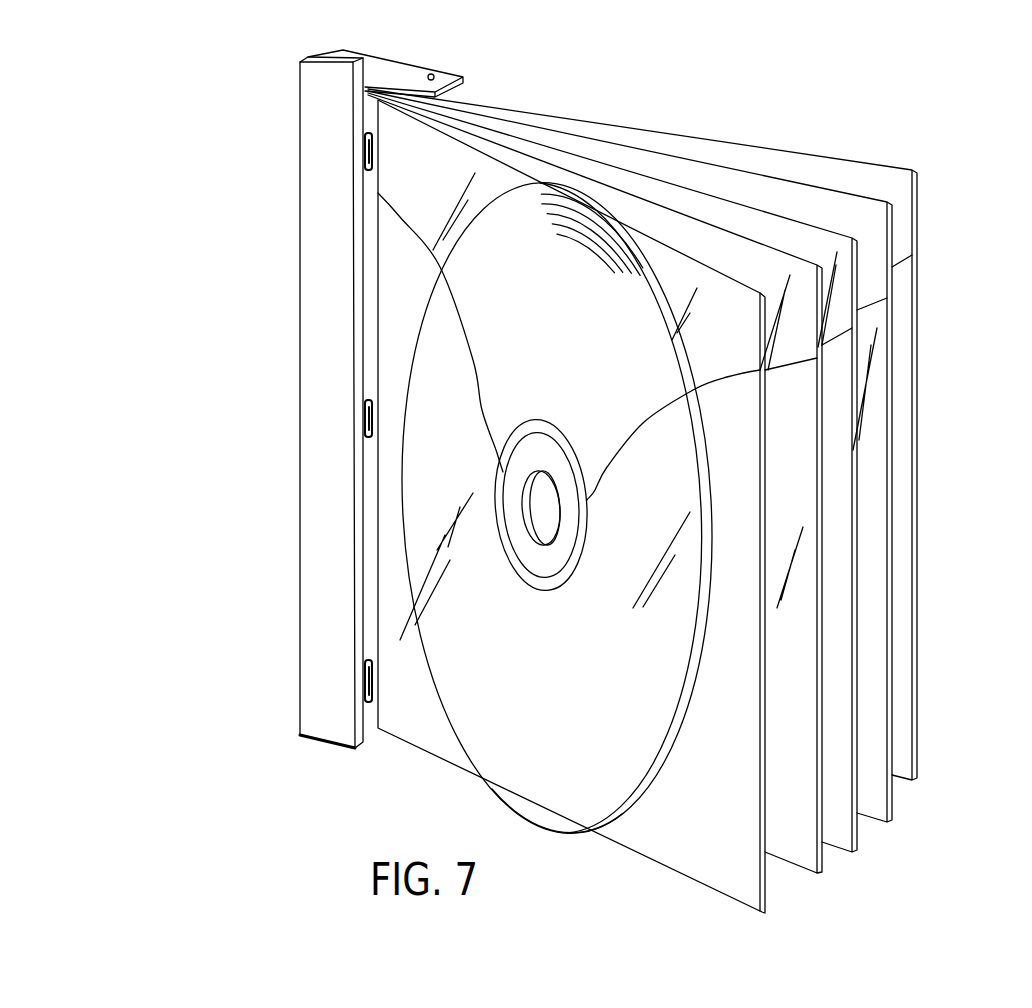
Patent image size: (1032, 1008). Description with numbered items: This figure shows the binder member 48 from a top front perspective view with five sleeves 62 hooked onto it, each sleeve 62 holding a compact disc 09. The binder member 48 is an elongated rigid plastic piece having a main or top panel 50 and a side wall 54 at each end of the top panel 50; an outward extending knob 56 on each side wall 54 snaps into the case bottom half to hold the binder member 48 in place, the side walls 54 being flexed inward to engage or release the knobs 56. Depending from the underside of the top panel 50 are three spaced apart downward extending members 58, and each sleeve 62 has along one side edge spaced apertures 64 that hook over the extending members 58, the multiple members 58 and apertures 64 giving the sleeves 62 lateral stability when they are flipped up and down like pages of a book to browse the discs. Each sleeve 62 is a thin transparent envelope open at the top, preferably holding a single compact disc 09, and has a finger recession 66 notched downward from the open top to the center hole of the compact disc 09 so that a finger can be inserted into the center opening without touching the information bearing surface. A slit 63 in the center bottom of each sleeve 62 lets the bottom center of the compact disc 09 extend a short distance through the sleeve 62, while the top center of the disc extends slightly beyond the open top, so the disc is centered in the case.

The binder member 48 is at (588, 485).
The top panel 50 is at (327, 580).
The side wall 54 is at (372, 72).
The knob 56 is at (433, 74).
The extending member 58 is at (363, 152).
The compact disc 09 is at (545, 298).
The sleeve 62 is at (913, 302).
The slit 63 is at (566, 833).
The aperture 64 is at (367, 140).
The finger recession 66 is at (588, 465).